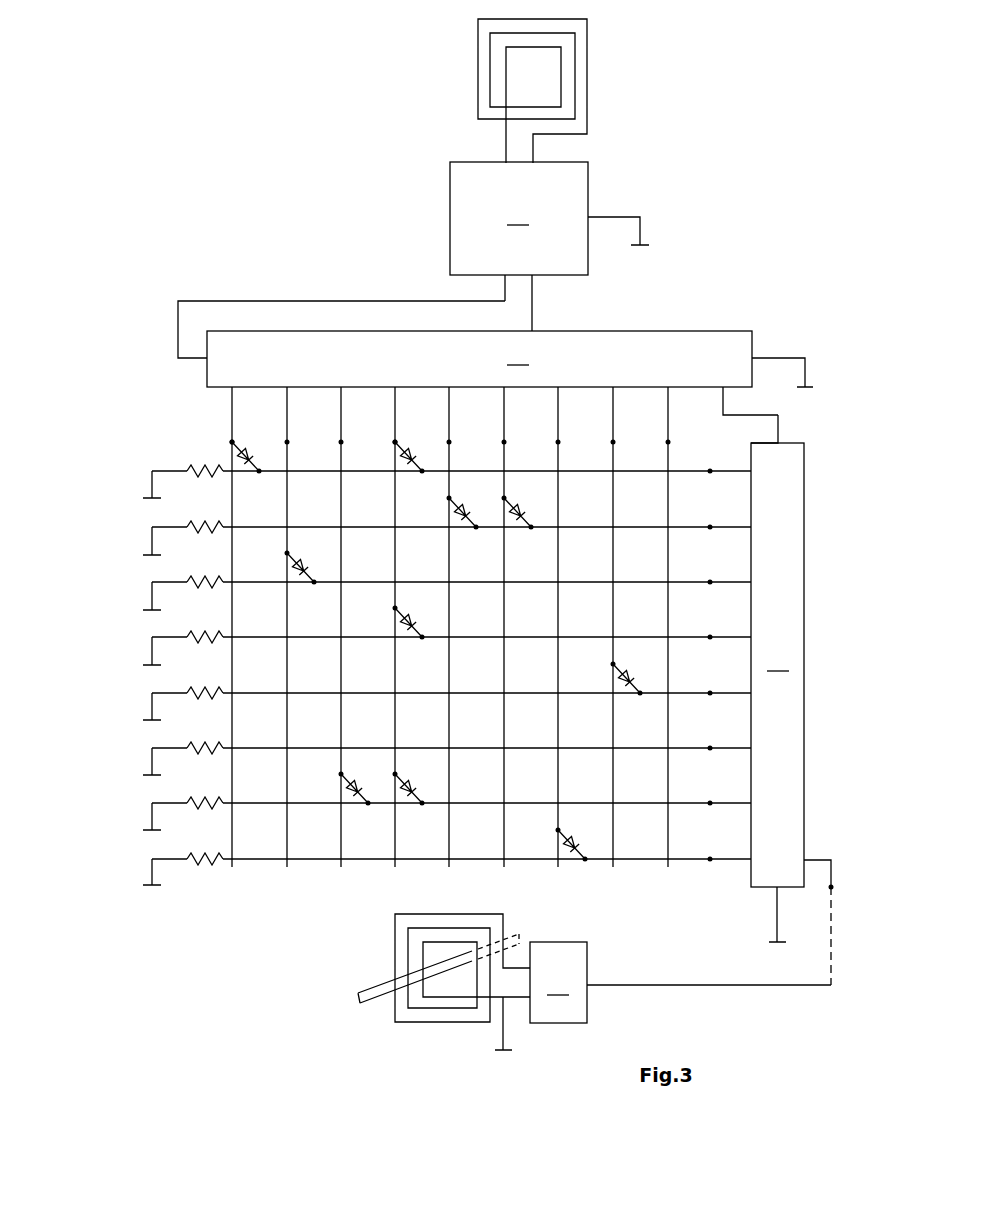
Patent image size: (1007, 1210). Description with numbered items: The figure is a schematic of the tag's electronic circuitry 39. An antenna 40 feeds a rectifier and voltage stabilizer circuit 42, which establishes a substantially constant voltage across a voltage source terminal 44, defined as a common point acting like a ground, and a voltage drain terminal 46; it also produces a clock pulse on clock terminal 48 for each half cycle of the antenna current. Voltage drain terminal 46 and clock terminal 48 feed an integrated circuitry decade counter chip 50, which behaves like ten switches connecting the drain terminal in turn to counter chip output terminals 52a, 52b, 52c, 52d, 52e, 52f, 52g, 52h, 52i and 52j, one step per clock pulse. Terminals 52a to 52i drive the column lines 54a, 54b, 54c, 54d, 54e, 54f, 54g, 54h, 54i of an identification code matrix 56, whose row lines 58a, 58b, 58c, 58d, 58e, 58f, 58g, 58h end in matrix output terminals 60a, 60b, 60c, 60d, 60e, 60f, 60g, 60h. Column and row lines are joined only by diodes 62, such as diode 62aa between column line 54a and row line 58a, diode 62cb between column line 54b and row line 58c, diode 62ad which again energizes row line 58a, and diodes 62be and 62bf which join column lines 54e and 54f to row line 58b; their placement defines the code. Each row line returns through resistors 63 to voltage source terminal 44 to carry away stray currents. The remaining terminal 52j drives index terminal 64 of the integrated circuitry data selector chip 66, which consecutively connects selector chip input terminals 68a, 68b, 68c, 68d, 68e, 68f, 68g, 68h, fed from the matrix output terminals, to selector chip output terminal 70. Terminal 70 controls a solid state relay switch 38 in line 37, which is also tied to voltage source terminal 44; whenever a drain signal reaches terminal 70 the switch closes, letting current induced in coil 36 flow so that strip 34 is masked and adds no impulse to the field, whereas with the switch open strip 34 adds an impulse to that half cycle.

The strip 34 is at (376, 990).
The coil 36 is at (395, 930).
The line 37 is at (522, 968).
The solid state relay switch 38 is at (680, 982).
The circuitry 39 is at (748, 214).
The antenna 40 is at (588, 72).
The rectifier and voltage stabilizer circuit 42 is at (519, 218).
The voltage source terminal 44 is at (640, 247).
The voltage drain terminal 46 is at (533, 313).
The clock terminal 48 is at (297, 302).
The integrated circuitry decade counter chip 50 is at (479, 359).
The counter chip output terminal 52a is at (233, 426).
The counter chip output terminal 52b is at (288, 426).
The counter chip output terminal 52c is at (342, 426).
The counter chip output terminal 52d is at (396, 426).
The counter chip output terminal 52e is at (450, 426).
The counter chip output terminal 52f is at (505, 426).
The counter chip output terminal 52g is at (559, 426).
The counter chip output terminal 52h is at (614, 426).
The counter chip output terminal 52i is at (669, 426).
The counter chip output terminal 52j is at (732, 416).
The column line 54a is at (233, 731).
The column line 54b is at (288, 731).
The column line 54c is at (342, 731).
The column line 54d is at (396, 731).
The column line 54e is at (450, 731).
The column line 54f is at (505, 731).
The column line 54g is at (558, 707).
The column line 54h is at (613, 738).
The column line 54i is at (669, 718).
The identification code matrix 56 is at (270, 888).
The row line 58a is at (658, 452).
The row line 58b is at (657, 526).
The row line 58c is at (657, 581).
The row line 58d is at (657, 636).
The row line 58e is at (658, 692).
The row line 58f is at (657, 747).
The row line 58g is at (657, 802).
The row line 58h is at (657, 858).
The matrix output terminal 60a is at (692, 471).
The matrix output terminal 60b is at (692, 527).
The matrix output terminal 60c is at (692, 582).
The matrix output terminal 60d is at (692, 637).
The matrix output terminal 60e is at (692, 693).
The matrix output terminal 60f is at (692, 748).
The matrix output terminal 60g is at (692, 803).
The matrix output terminal 60h is at (692, 859).
The diode 62 is at (409, 621).
The diode 62aa is at (250, 457).
The diode 62ad is at (413, 457).
The diode 62be is at (466, 511).
The diode 62bf is at (520, 511).
The diode 62cb is at (302, 566).
The resistor 63 is at (222, 525).
The index terminal 64 is at (779, 431).
The integrated circuitry data selector chip 66 is at (777, 665).
The selector chip input terminal 68a is at (737, 472).
The selector chip input terminal 68b is at (737, 528).
The selector chip input terminal 68c is at (737, 583).
The selector chip input terminal 68d is at (737, 638).
The selector chip input terminal 68e is at (737, 694).
The selector chip input terminal 68f is at (737, 749).
The selector chip input terminal 68g is at (737, 804).
The selector chip input terminal 68h is at (737, 860).
The selector chip output terminal 70 is at (832, 877).